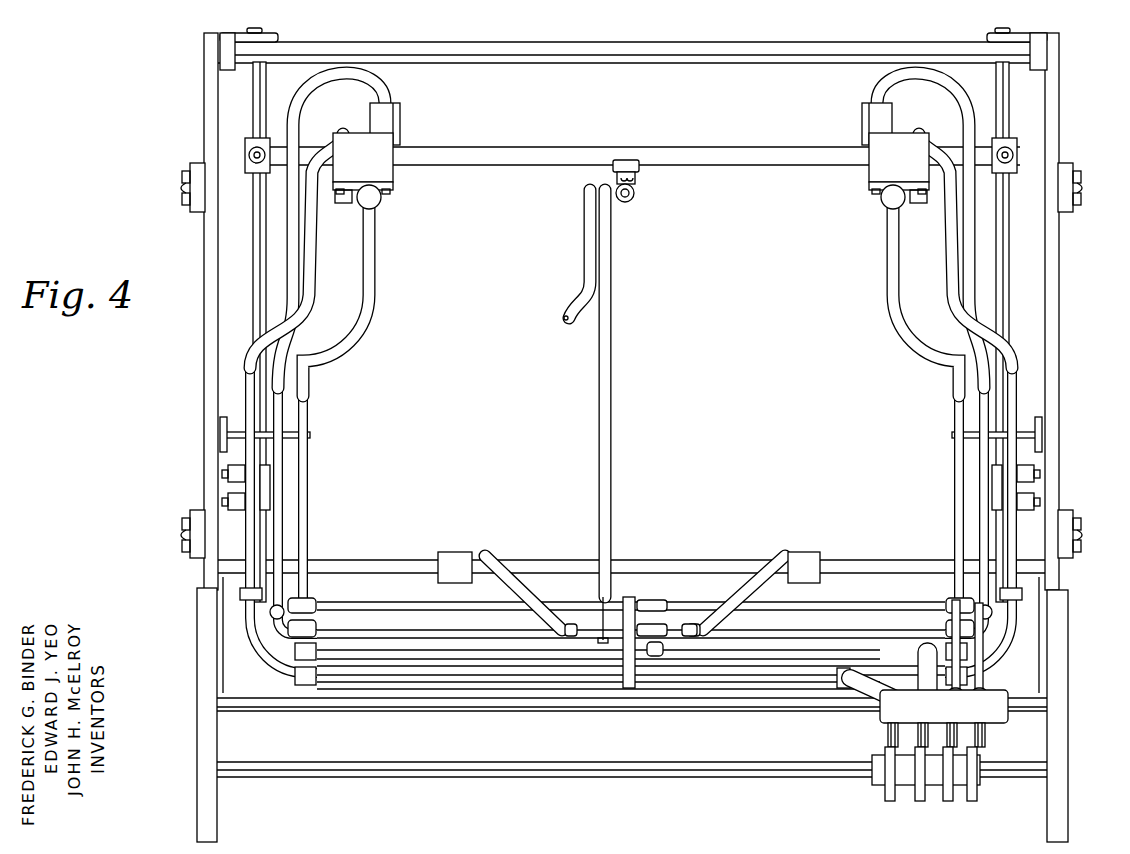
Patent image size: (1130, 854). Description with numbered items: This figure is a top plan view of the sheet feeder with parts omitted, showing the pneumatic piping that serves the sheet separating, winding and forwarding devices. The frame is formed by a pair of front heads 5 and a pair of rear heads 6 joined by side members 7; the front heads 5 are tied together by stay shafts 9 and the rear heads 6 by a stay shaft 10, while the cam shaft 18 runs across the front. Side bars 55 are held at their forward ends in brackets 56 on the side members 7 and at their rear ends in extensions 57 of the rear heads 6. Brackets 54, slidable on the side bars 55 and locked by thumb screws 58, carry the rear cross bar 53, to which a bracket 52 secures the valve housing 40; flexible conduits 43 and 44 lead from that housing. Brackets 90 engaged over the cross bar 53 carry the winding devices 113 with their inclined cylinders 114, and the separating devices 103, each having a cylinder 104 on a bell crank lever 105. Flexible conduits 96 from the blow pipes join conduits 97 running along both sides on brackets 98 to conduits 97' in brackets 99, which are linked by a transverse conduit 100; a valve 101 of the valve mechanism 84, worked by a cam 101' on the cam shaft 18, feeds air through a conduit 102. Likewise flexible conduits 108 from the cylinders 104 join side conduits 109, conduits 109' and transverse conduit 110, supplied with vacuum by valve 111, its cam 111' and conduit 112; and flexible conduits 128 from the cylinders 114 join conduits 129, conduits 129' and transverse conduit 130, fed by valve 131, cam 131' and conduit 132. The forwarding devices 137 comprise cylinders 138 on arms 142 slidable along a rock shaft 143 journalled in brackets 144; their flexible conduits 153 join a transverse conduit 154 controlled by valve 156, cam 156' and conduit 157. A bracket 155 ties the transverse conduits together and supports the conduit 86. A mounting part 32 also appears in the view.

The front heads 5 is at (205, 728).
The rear heads 6 is at (206, 88).
The side members 7 is at (212, 362).
The stay shafts 9 is at (470, 698).
The stay shaft 10 is at (612, 27).
The cam shaft 18 is at (618, 770).
The mounting bracket 32 is at (188, 182).
The valve housing 40 is at (636, 186).
The flexible conduit 43 is at (604, 414).
The flexible conduit 44 is at (583, 300).
The bracket 52 is at (613, 168).
The rear cross bar 53 is at (660, 130).
The brackets 54 is at (250, 142).
The side bars 55 is at (257, 106).
The brackets 56 is at (234, 474).
The extensions 57 is at (256, 37).
The thumb screws 58 is at (252, 160).
The valve mechanism 84 is at (1012, 727).
The conduit 86 is at (622, 600).
The brackets 90 is at (378, 156).
The flexible conduits 96 is at (312, 248).
The conduits 97 is at (632, 519).
The conduits 97' is at (635, 682).
The brackets 98 is at (290, 436).
The brackets 99 is at (226, 658).
The conduit 100 is at (532, 672).
The valve 101 is at (872, 736).
The cam 101' is at (910, 781).
The conduit 102 is at (880, 690).
The suction sheet separating devices 103 is at (388, 201).
The cylinder 104 is at (368, 200).
The bell crank lever 105 is at (372, 186).
The flexible conduits 108 is at (366, 306).
The conduits 109 is at (632, 500).
The conduits 109' is at (631, 635).
The conduit 110 is at (408, 583).
The valve 111 is at (979, 724).
The cam 111' is at (942, 781).
The conduit 112 is at (872, 585).
The winding devices 113 is at (405, 109).
The inclined cylinder 114 is at (384, 120).
The flexible conduits 128 is at (290, 314).
The conduits 129 is at (631, 510).
The conduits 129' is at (631, 645).
The conduit 130 is at (420, 612).
The valve 131 is at (915, 684).
The cam 131' is at (904, 781).
The conduit 132 is at (956, 704).
The forwarding devices 137 is at (471, 586).
The cylinder 138 is at (490, 562).
The arm 142 is at (462, 538).
The rock shaft 143 is at (660, 545).
The brackets 144 is at (268, 570).
The flexible conduits 153 is at (522, 598).
The conduit 154 is at (460, 630).
The bracket 155 is at (628, 690).
The valve 156 is at (1002, 741).
The cam 156' is at (993, 781).
The conduit 157 is at (782, 627).